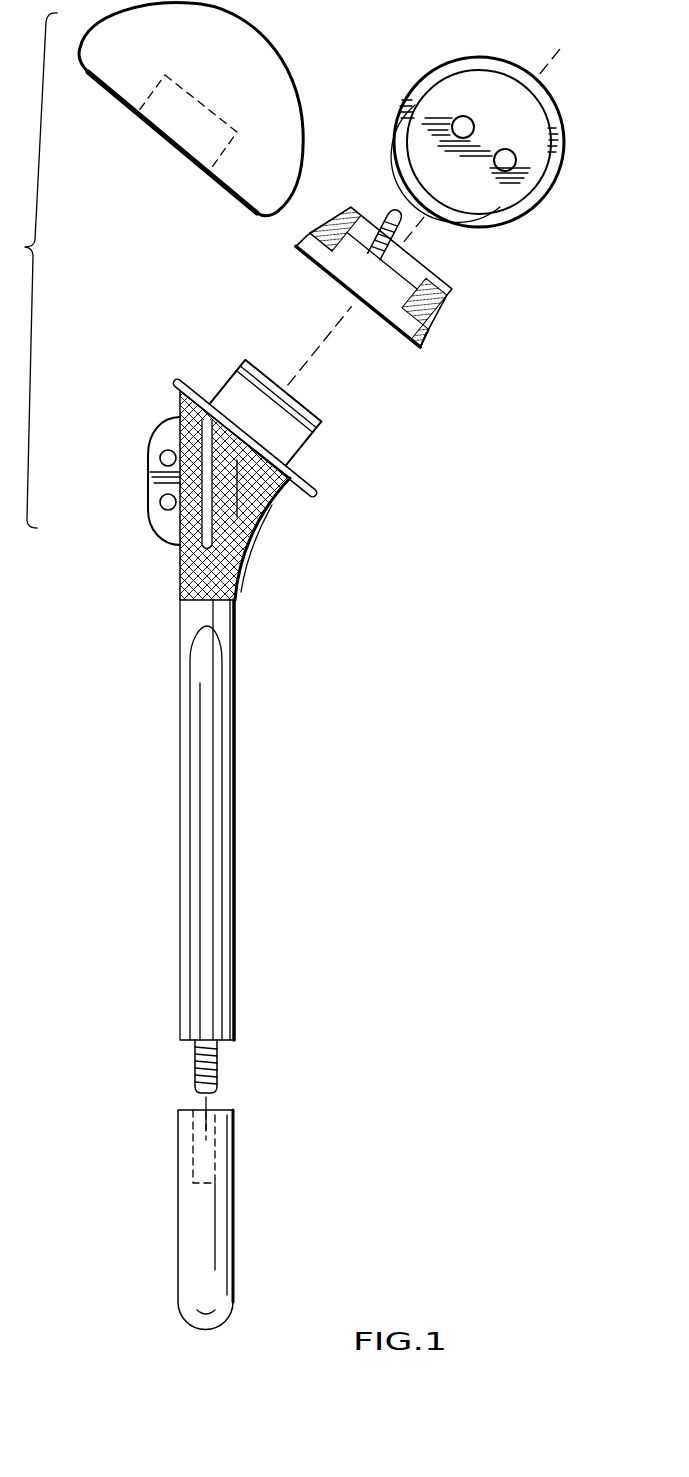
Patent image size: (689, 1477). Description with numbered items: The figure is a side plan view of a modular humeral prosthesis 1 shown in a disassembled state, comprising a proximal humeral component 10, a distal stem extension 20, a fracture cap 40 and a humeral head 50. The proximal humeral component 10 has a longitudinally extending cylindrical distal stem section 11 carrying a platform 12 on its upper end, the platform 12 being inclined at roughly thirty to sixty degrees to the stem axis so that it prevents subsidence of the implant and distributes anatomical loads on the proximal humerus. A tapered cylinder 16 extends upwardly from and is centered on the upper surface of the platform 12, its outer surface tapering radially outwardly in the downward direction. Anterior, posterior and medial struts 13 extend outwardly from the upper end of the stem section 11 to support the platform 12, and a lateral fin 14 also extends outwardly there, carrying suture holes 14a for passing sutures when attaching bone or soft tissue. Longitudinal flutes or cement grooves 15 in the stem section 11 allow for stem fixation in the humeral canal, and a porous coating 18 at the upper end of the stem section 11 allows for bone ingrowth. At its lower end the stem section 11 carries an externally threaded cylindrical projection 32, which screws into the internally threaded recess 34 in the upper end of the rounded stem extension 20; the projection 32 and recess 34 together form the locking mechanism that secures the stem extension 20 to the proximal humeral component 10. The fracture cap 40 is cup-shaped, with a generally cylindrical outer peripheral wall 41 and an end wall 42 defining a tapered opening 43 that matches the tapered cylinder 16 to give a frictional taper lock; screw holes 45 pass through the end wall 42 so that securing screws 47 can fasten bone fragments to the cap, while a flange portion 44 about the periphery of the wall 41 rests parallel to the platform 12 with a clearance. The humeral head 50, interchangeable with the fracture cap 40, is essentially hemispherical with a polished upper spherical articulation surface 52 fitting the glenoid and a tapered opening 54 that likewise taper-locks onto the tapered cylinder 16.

The prosthesis 1 is at (127, 772).
The proximal humeral component 10 is at (235, 745).
The distal stem section 11 is at (254, 820).
The platform 12 is at (318, 492).
The struts 13 is at (273, 513).
The lateral fin 14 is at (123, 490).
The holes 14a is at (148, 488).
The flutes or cement grooves 15 is at (210, 810).
The tapered cylinder 16 is at (322, 438).
The coating 18 is at (240, 587).
The distal stem extension 20 is at (191, 1219).
The projection 32 is at (192, 1068).
The recess 34 is at (192, 1157).
The fracture cap 40 is at (440, 229).
The outer peripheral wall 41 is at (430, 323).
The end wall 42 is at (537, 153).
The tapered opening 43 is at (323, 268).
The flange portion 44 is at (433, 347).
The screw holes 45 is at (508, 163).
The securing screws 47 is at (388, 217).
The humeral head 50 is at (203, 109).
The upper spherical articulation surface 52 is at (292, 72).
The tapered opening 54 is at (180, 148).